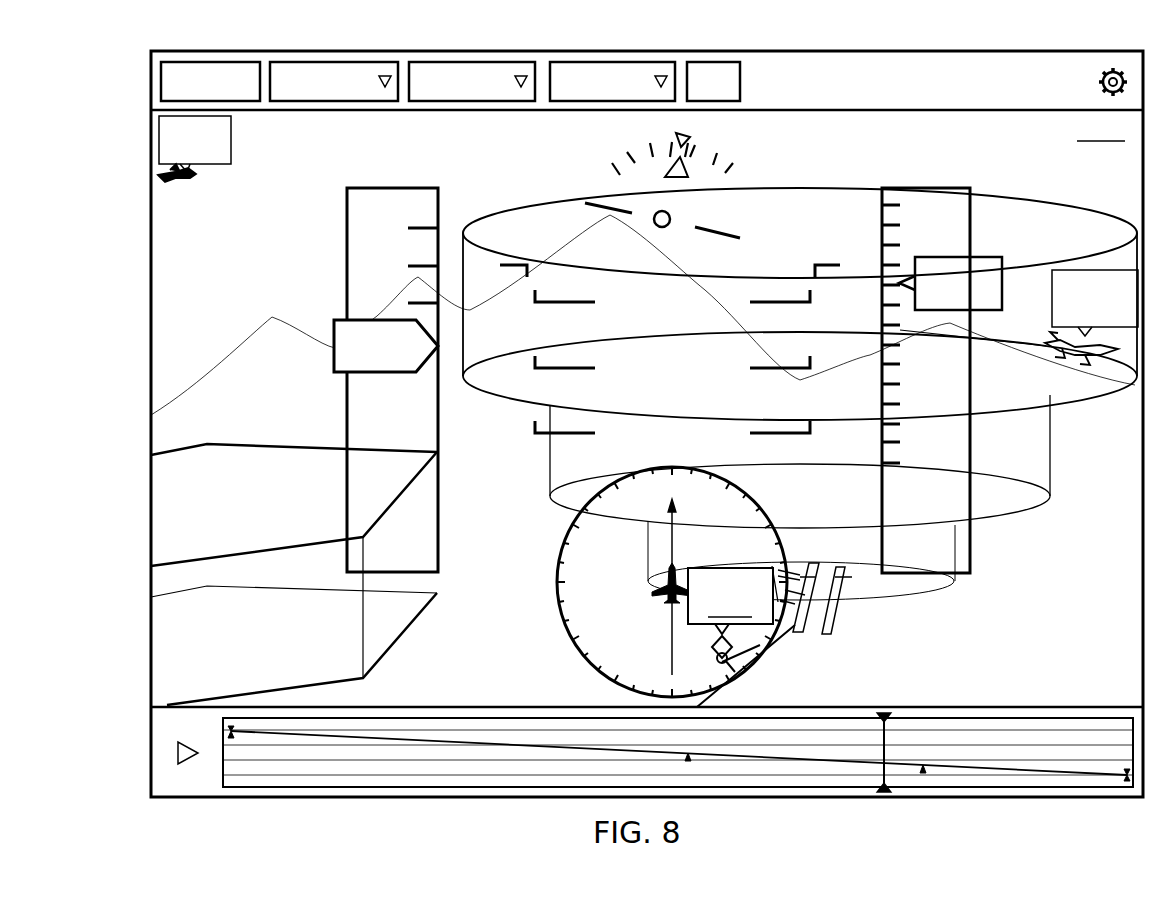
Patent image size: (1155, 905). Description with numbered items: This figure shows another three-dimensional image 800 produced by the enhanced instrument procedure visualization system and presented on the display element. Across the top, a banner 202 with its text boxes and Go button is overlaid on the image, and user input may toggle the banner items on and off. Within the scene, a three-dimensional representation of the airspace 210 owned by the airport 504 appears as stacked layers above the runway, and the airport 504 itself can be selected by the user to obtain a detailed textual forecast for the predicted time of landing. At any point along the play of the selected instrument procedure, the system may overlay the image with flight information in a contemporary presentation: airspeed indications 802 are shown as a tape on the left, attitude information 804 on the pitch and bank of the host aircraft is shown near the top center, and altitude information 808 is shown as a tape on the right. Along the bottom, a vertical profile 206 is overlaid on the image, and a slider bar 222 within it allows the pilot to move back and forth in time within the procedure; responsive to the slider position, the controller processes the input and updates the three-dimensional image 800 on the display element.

The banner 202 is at (958, 66).
The three-dimensional image 800 is at (644, 410).
The airspeed indications 802 is at (395, 188).
The attitude information 804 is at (748, 118).
The altitude information 808 is at (940, 188).
The airspace 210 is at (1060, 214).
The airport 504 is at (848, 552).
The slider bar 222 is at (887, 738).
The vertical profile 206 is at (1036, 740).